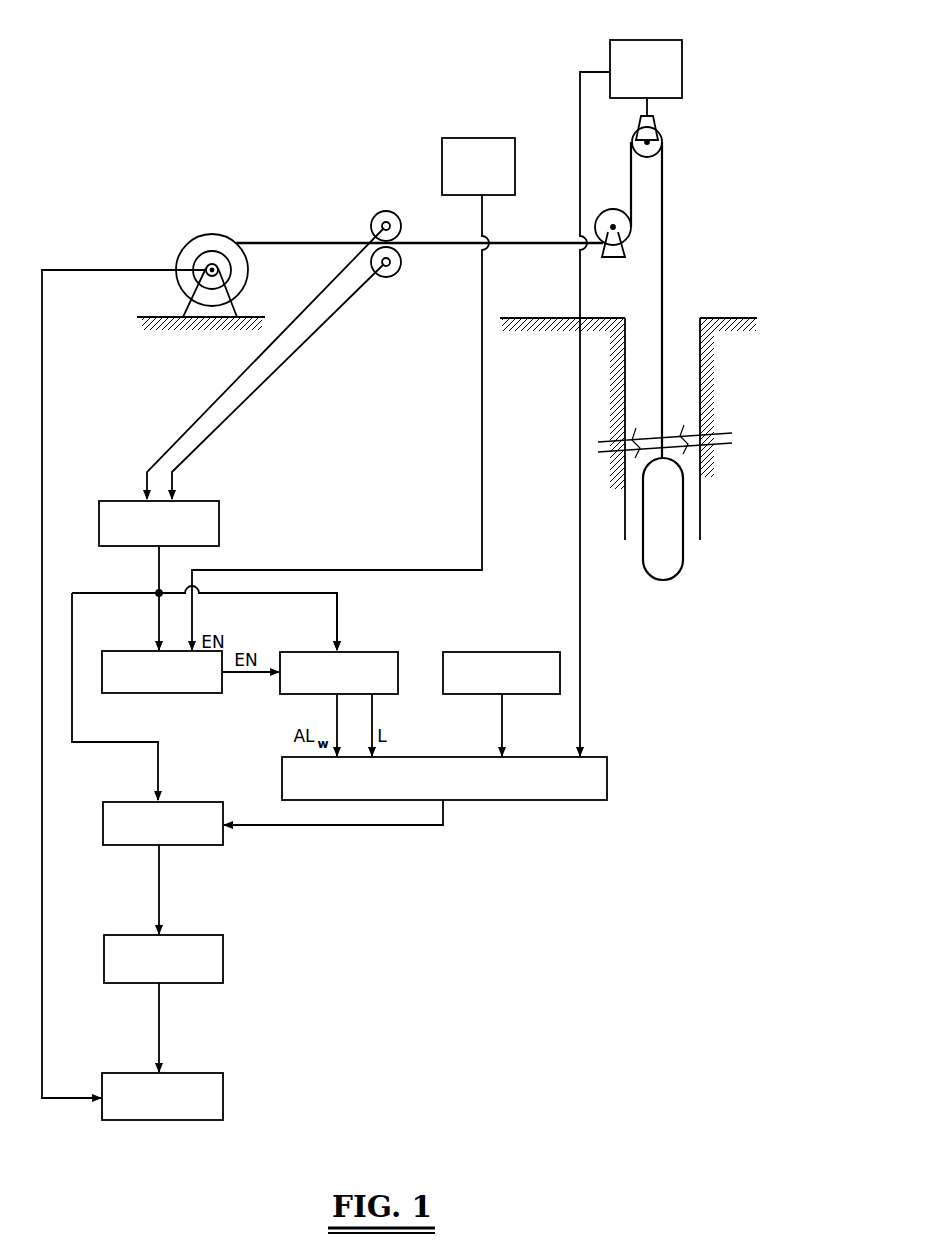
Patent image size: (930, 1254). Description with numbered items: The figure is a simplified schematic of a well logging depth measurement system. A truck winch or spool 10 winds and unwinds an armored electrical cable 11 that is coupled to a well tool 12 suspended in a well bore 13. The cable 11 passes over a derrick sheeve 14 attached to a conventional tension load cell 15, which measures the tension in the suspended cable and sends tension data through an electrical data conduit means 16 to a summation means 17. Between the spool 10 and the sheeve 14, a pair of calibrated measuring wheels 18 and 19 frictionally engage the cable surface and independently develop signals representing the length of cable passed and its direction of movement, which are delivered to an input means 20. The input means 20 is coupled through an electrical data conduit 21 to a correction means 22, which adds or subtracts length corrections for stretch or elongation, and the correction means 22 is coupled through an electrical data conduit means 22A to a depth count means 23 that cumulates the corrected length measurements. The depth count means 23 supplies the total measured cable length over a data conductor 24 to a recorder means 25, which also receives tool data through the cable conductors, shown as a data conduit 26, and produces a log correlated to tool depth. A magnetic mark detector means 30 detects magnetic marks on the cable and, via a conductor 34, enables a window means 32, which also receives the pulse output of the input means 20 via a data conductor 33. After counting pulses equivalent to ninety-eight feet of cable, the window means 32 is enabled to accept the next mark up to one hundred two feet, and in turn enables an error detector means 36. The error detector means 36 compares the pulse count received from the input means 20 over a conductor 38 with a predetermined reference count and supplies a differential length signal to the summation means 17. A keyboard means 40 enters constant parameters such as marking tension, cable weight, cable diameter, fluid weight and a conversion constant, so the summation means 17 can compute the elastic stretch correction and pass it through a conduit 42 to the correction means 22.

The truck winch or spool 10 is at (200, 234).
The armored electrical cable 11 is at (258, 241).
The well tool 12 is at (665, 580).
The well bore 13 is at (700, 508).
The derrick sheeve 14 is at (660, 130).
The tension load cell 15 is at (682, 68).
The electrical data conduit means 16 is at (580, 283).
The summation means 17 is at (282, 768).
The calibrated measuring wheel 18 is at (386, 210).
The calibrated measuring wheel 19 is at (400, 270).
The input means 20 is at (205, 501).
The electrical data conduit 21 is at (85, 593).
The correction means 22 is at (223, 838).
The electrical data conduit means 22A is at (159, 887).
The depth count means 23 is at (223, 956).
The data conductor 24 is at (159, 1025).
The recorder means 25 is at (223, 1085).
The data conduit 26 is at (42, 1026).
The mark detector means 30 is at (463, 138).
The window means 32 is at (155, 693).
The data conductor 33 is at (159, 615).
The conductor 34 is at (302, 570).
The error detector means 36 is at (380, 652).
The conductor 38 is at (337, 612).
The keyboard means 40 is at (480, 652).
The conduit 42 is at (443, 830).